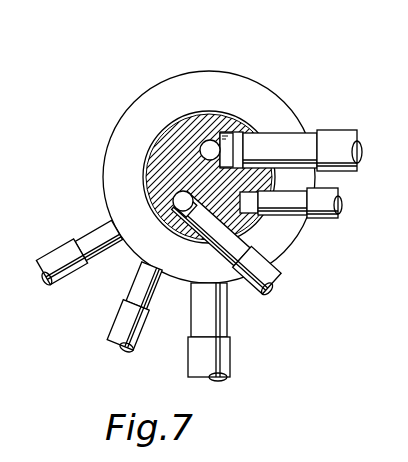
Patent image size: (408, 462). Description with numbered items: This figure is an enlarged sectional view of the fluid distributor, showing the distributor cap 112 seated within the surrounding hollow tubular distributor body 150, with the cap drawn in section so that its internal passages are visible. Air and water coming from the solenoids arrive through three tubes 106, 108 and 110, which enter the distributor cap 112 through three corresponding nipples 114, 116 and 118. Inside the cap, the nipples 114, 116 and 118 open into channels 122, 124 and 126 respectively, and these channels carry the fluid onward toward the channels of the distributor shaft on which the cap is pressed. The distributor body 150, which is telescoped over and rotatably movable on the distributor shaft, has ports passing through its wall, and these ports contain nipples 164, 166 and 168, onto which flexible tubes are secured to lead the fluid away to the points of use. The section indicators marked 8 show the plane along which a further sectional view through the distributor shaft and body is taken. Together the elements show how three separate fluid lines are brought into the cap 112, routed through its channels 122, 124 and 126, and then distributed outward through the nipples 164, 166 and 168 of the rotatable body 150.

The section line 8- 8 is at (231, 180).
The tube 106 is at (337, 130).
The tube 108 is at (327, 213).
The tube 110 is at (248, 297).
The distributor cap 112 is at (223, 122).
The nipple 114 is at (283, 140).
The nipple 116 is at (282, 207).
The nipple 118 is at (218, 253).
The channel 122 is at (178, 120).
The channel 124 is at (250, 207).
The channel 126 is at (176, 214).
The distributor body 150 is at (232, 72).
The nipple 164 is at (197, 313).
The nipple 166 is at (127, 293).
The nipple 168 is at (92, 233).